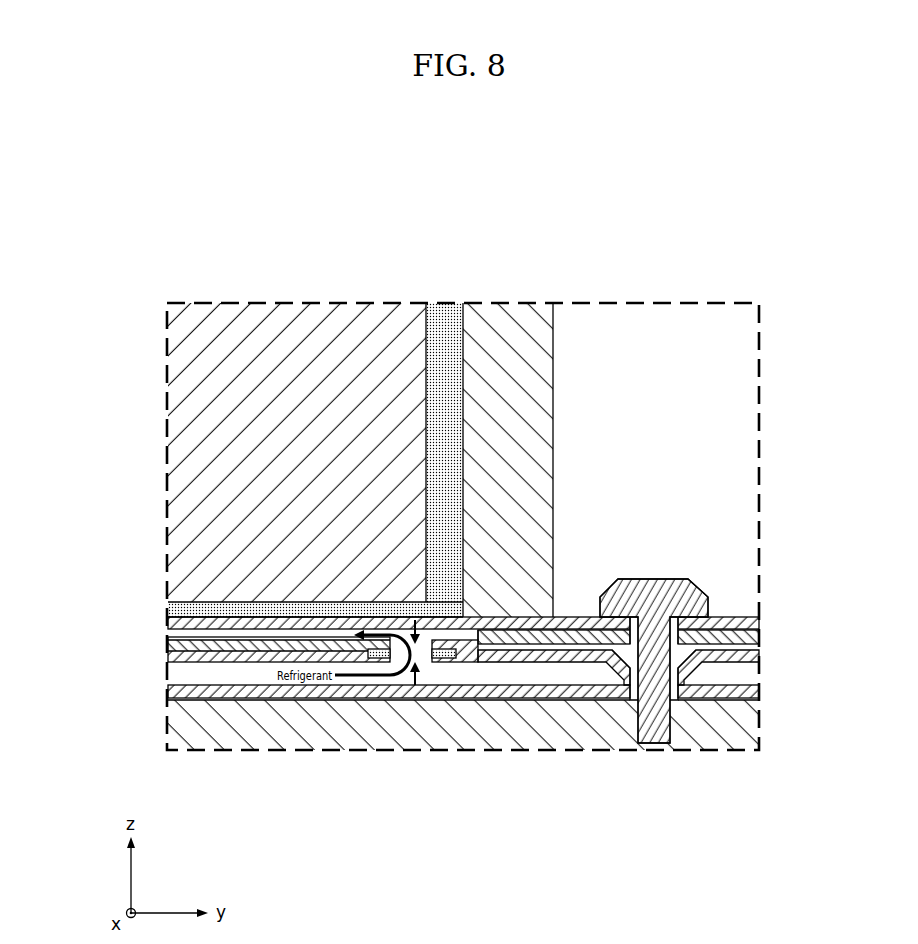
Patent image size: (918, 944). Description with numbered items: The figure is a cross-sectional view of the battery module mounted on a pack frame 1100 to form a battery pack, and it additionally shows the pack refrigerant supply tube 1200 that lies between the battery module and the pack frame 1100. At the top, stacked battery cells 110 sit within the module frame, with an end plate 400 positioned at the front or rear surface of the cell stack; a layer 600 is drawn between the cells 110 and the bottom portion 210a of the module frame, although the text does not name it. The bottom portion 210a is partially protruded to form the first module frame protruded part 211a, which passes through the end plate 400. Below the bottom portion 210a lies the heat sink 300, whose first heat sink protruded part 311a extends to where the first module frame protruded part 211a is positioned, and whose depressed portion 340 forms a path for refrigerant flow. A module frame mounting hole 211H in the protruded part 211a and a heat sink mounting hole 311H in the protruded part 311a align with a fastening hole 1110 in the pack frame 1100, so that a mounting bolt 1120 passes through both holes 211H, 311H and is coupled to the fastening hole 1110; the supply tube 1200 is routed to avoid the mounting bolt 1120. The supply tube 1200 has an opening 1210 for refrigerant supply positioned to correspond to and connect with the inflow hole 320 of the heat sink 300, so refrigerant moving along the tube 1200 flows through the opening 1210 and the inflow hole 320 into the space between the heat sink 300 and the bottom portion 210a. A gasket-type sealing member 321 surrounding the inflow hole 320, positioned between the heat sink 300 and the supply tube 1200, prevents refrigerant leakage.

The battery cell 110 is at (299, 337).
The end plate 400 is at (507, 337).
The thermal interface layer 600 is at (170, 609).
The bottom portion of the module frame 210a is at (170, 622).
The first module frame protruded part 211a is at (760, 622).
The module frame mounting hole 211H is at (676, 603).
The first heat sink protruded part 311a is at (760, 637).
The heat sink mounting hole 311H is at (680, 668).
The heat sink 300 is at (516, 634).
The inflow hole 320 is at (413, 618).
The sealing member 321 is at (376, 658).
The depressed portion 340 is at (467, 648).
The pack refrigerant supply tube 1200 is at (172, 657).
The opening for the refrigerant supply 1210 is at (416, 686).
The pack frame 1100 is at (178, 726).
The fastening hole 1110 is at (637, 723).
The mounting bolt 1120 is at (656, 735).